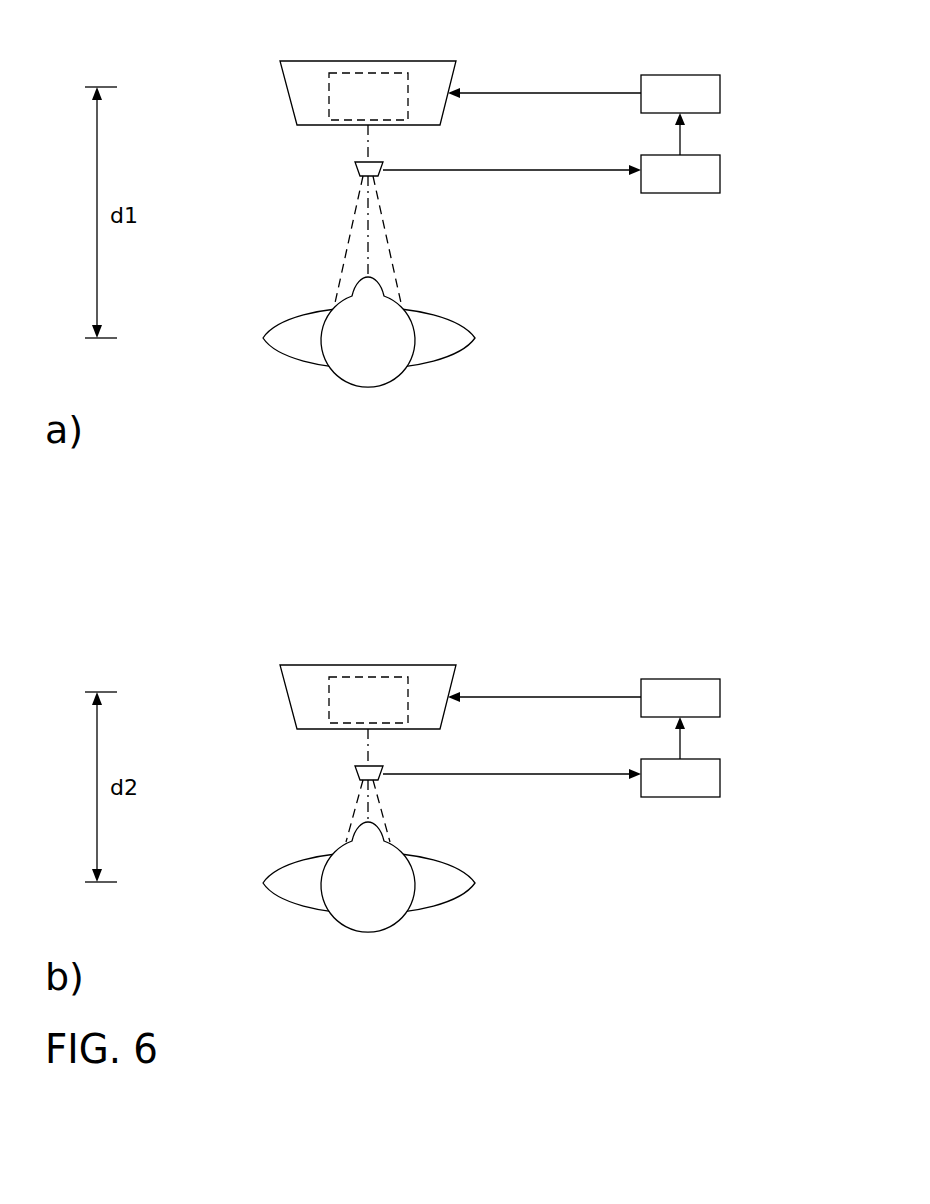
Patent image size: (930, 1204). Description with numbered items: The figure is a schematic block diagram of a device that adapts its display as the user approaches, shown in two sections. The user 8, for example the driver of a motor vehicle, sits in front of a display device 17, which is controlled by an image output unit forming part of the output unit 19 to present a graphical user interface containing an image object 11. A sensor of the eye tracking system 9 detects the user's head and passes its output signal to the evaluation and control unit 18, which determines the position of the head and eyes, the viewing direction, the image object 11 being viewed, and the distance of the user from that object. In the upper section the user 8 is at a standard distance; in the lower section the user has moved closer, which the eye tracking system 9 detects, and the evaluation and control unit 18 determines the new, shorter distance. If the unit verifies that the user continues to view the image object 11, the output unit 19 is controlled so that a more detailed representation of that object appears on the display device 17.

The user 8 is at (474, 338).
The eye tracking system 9 is at (357, 171).
The image object 11 is at (393, 87).
The display device 17 is at (286, 89).
The evaluation and control unit 18 is at (680, 193).
The output unit 19 is at (683, 75).